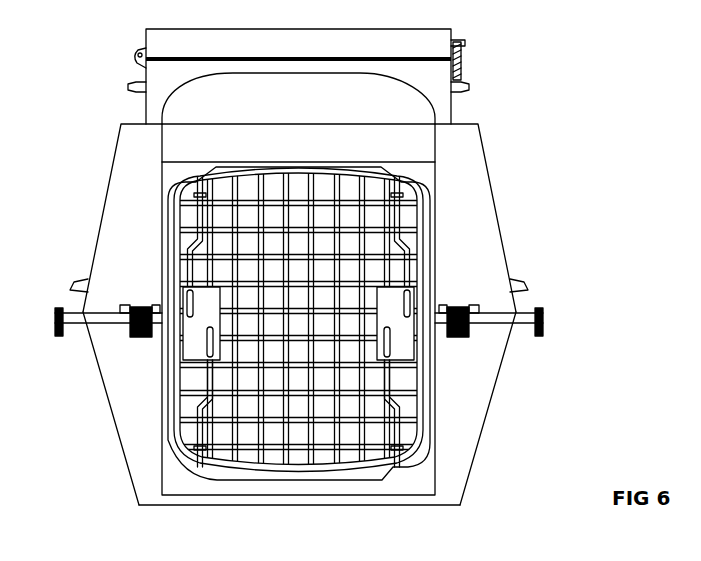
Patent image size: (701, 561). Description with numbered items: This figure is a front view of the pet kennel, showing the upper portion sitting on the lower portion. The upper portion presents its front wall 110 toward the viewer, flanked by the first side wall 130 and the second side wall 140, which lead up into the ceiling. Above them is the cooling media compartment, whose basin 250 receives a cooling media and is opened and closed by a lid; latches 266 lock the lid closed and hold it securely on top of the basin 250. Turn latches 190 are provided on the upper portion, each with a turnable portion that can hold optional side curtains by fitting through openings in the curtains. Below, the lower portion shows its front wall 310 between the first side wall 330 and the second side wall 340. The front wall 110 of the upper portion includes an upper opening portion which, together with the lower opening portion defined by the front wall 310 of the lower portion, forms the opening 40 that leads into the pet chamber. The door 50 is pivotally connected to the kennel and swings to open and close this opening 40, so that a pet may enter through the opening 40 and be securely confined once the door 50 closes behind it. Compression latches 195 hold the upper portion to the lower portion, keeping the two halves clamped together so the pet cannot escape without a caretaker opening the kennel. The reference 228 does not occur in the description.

The hinge tab 228 is at (135, 50).
The latches 266 is at (462, 43).
The turn latches 190 is at (126, 87).
The basin 250 is at (153, 107).
The opening 40 is at (418, 193).
The second side wall 140 is at (107, 195).
The first side wall 130 is at (494, 202).
The front wall 110 is at (472, 248).
The compression latches 195 is at (128, 337).
The second side wall 340 is at (113, 428).
The first side wall 330 is at (490, 422).
The front wall 310 is at (453, 468).
The door 50 is at (188, 452).